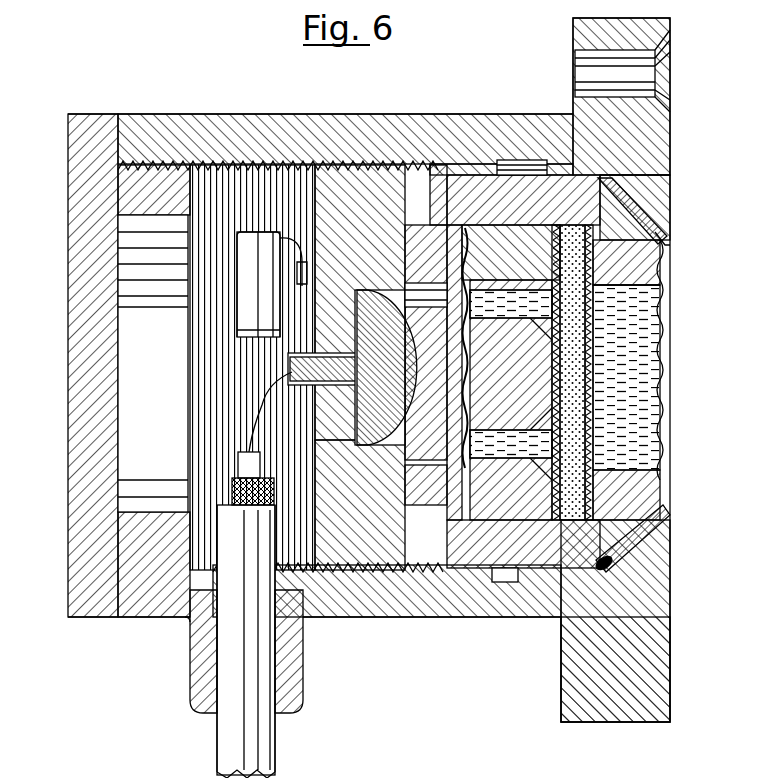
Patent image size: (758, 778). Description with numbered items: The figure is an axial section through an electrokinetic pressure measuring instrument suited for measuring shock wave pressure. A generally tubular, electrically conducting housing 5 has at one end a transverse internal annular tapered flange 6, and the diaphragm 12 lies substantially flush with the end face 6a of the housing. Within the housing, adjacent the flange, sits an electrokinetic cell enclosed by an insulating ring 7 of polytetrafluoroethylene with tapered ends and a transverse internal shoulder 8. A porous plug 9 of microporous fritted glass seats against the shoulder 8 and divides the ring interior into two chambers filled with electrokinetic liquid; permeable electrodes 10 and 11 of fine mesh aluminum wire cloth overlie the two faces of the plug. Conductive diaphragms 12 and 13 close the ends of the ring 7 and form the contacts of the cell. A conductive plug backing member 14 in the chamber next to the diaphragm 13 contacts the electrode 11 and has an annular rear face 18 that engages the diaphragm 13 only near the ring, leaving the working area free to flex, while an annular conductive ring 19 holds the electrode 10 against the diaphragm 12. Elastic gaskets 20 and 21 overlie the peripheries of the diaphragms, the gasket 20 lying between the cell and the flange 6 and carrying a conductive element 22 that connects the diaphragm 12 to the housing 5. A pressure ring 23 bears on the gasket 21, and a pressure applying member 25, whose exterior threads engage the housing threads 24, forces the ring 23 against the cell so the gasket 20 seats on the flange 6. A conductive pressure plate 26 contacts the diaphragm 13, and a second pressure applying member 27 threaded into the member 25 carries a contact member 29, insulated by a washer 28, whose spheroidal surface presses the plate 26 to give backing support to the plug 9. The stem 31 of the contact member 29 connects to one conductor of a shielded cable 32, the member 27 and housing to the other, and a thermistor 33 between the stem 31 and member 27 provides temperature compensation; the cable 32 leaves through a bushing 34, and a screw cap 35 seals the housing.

The housing 5 is at (312, 114).
The flange 6 is at (668, 208).
The end face 6a is at (672, 645).
The insulating enclosing ring 7 is at (648, 195).
The internal shoulder 8 is at (660, 240).
The porous plug 9 is at (618, 262).
The electrode 10 is at (603, 292).
The electrode 11 is at (622, 330).
The diaphragm 12 is at (668, 358).
The diaphragm 13 is at (483, 175).
The plug backing member 14 is at (517, 499).
The rear face 18 is at (478, 258).
The annular ring 19 is at (655, 485).
The elastic annular gasket 20 is at (606, 182).
The elastic annular gasket 21 is at (522, 168).
The electrically conductive element 22 is at (612, 562).
The pressure ring 23 is at (443, 190).
The interior threads 24 is at (242, 165).
The pressure applying member 25 is at (368, 185).
The pressure plate 26 is at (441, 381).
The pressure applying member 27 is at (356, 498).
The insulating washer 28 is at (375, 455).
The contact member 29 is at (393, 382).
The stem 31 is at (323, 369).
The shielded cable 32 is at (290, 762).
The thermistor 33 is at (244, 303).
The bushing 34 is at (318, 694).
The screw cap 35 is at (73, 370).